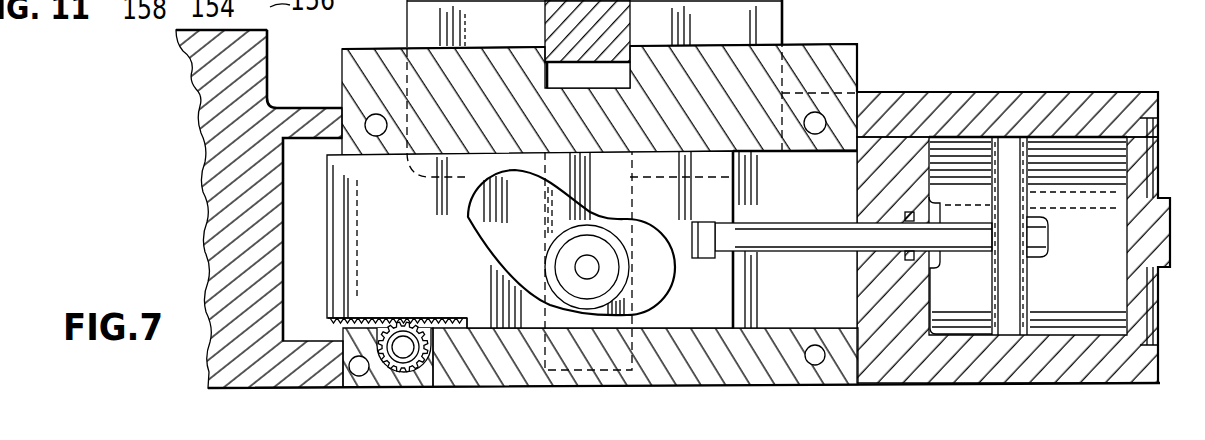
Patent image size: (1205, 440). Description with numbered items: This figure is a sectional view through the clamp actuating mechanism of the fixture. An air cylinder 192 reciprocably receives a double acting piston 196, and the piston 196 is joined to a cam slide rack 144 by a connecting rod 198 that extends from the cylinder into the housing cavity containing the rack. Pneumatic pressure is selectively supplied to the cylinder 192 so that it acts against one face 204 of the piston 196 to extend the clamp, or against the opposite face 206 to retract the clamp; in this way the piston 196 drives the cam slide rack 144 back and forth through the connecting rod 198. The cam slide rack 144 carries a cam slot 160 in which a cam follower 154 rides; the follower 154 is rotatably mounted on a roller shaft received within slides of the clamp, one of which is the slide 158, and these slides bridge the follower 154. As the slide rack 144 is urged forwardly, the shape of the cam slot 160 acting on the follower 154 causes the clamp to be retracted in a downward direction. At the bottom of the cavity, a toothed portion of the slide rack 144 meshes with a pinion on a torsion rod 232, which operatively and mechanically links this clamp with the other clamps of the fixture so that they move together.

The cam slide rack 144 is at (718, 305).
The cam follower 154 is at (608, 238).
The slide 158 is at (554, 221).
The cam slot 160 is at (510, 268).
The air cylinder 192 is at (1125, 100).
The piston 196 is at (1030, 273).
The connecting rod 198 is at (836, 232).
The face 204 is at (993, 296).
The face 206 is at (1030, 298).
The torsion rod 232 is at (403, 353).